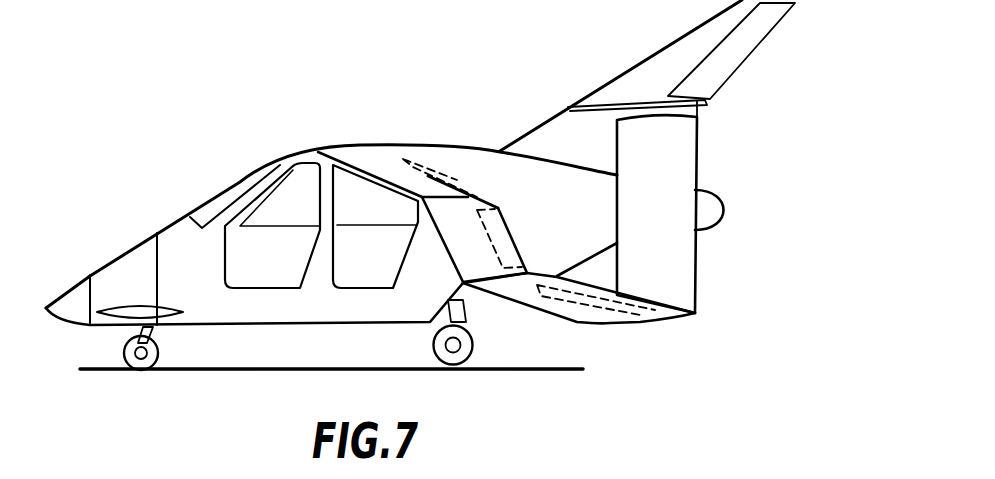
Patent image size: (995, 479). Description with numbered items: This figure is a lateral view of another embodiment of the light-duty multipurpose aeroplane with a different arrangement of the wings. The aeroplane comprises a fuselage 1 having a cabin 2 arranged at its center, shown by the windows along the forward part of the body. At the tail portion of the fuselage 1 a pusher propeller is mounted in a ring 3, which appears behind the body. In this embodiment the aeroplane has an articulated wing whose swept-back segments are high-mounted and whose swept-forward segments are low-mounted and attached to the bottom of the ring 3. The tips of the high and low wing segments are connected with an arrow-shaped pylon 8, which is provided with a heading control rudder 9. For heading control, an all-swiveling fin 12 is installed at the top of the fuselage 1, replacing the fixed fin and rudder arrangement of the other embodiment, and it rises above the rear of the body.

The fuselage 1 is at (128, 258).
The cabin 2 is at (273, 205).
The ring 3 is at (683, 268).
The arrow-shaped pylon 8 is at (448, 213).
The heading control rudder 9 is at (500, 207).
The all-swiveling fin 12 is at (602, 107).